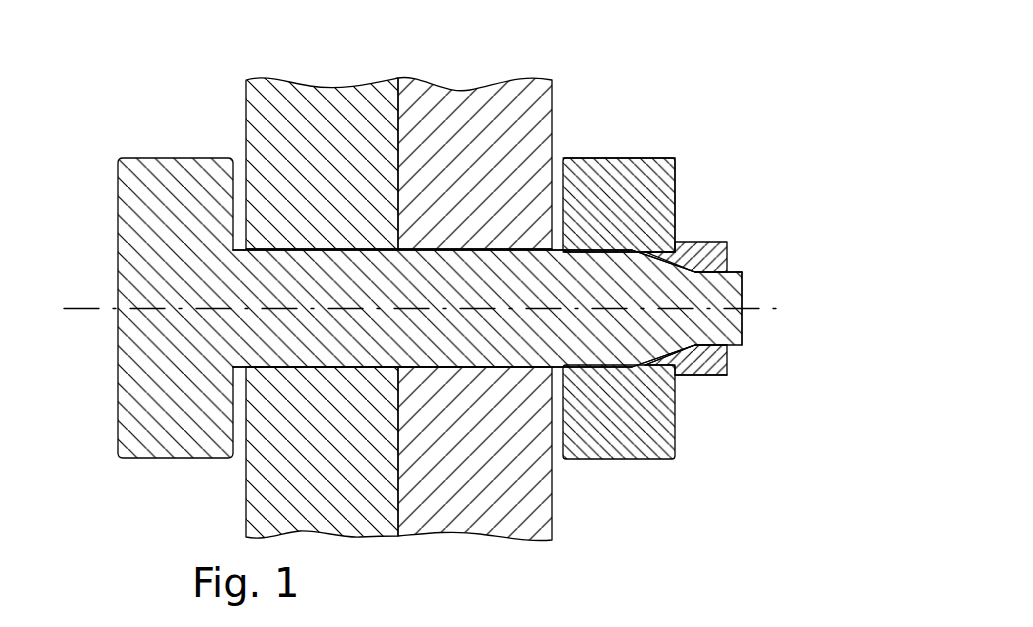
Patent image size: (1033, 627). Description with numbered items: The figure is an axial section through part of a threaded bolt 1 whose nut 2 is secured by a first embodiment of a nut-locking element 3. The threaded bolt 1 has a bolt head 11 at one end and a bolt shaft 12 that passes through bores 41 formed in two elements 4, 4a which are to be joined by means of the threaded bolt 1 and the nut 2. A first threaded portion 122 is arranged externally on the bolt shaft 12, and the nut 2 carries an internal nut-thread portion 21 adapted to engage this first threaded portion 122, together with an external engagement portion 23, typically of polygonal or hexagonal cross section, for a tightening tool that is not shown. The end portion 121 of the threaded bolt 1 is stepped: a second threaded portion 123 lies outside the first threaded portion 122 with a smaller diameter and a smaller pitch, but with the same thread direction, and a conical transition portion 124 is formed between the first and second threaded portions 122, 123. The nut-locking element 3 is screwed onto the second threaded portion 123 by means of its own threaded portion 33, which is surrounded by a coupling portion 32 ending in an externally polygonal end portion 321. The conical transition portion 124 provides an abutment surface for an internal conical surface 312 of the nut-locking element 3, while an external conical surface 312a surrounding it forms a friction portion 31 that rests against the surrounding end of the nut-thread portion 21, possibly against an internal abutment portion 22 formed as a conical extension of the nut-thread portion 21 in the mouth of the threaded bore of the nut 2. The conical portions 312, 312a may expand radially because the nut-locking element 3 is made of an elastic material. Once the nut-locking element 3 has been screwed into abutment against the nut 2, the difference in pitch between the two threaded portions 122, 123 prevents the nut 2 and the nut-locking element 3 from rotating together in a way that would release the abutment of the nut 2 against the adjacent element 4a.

The threaded bolt 1 is at (464, 255).
The bolt head 11 is at (167, 158).
The bolt shaft 12 is at (520, 309).
The end portion 121 is at (743, 290).
The first threaded portion 122 is at (523, 249).
The second threaded portion 123 is at (742, 272).
The conical transition portion 124 is at (660, 258).
The internal conical surface 312 is at (675, 336).
The nut 2 is at (671, 251).
The nut-thread portion 21 is at (600, 257).
The internal abutment portion 22 is at (680, 247).
The external engagement portion 23 is at (653, 157).
The nut-locking element 3 is at (766, 353).
The friction portion 31 is at (766, 404).
The external conical surface 312a is at (670, 378).
The coupling portion 32 is at (774, 398).
The externally polygonal end portion 321 is at (710, 378).
The threaded portion 33 is at (730, 346).
The element 4 is at (356, 271).
The element 4a is at (552, 94).
The bores 41 is at (445, 250).